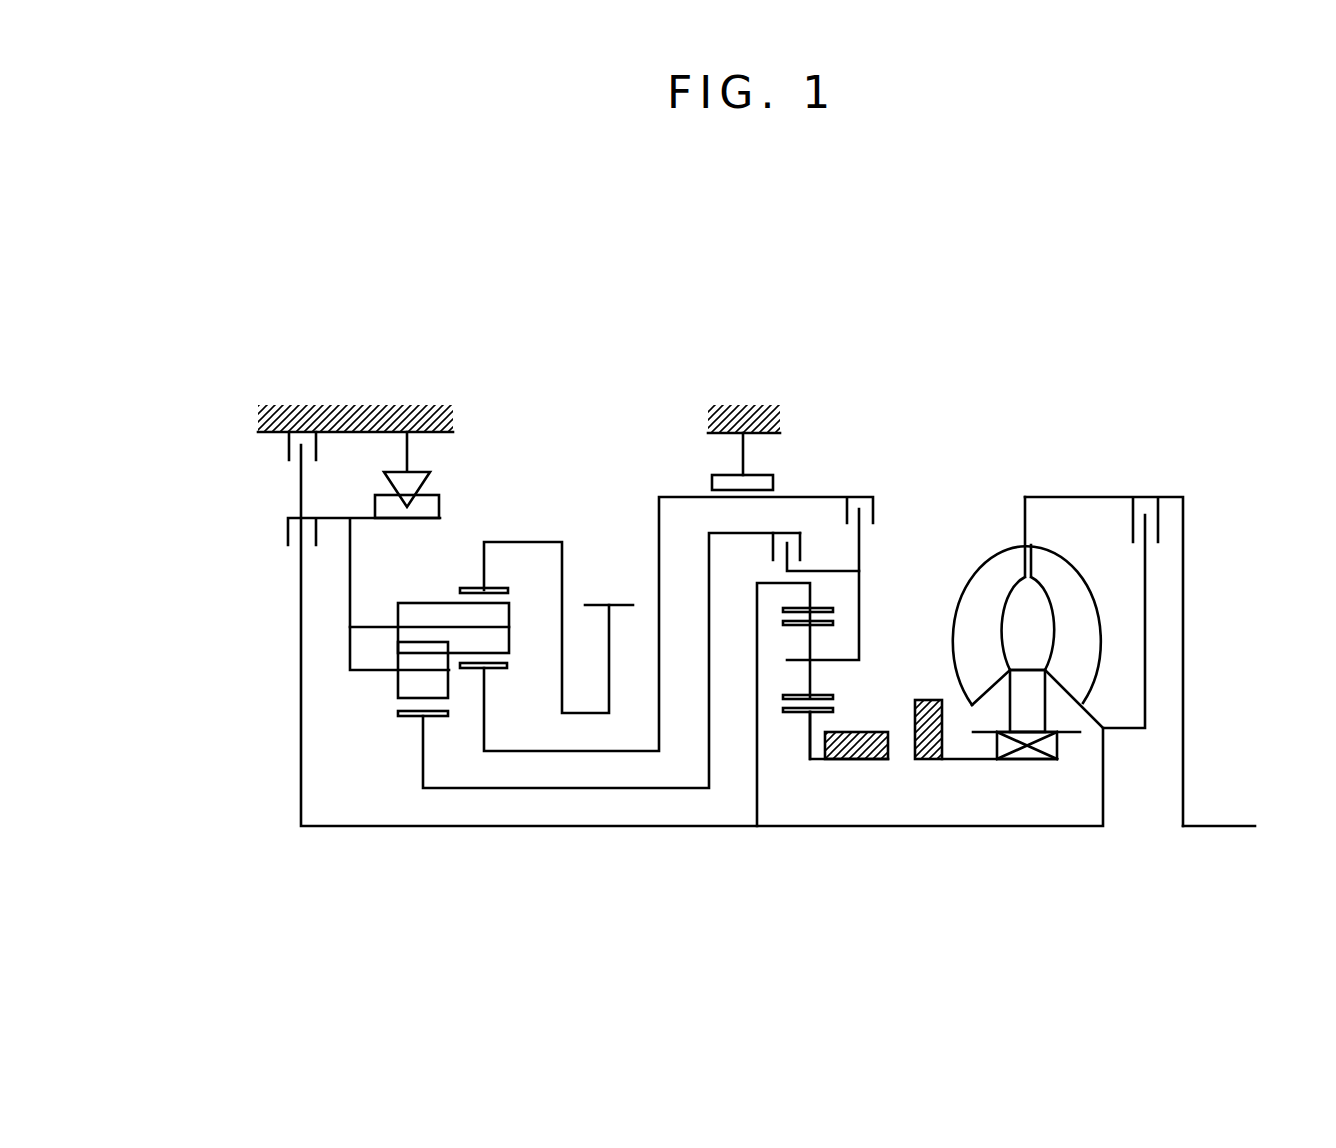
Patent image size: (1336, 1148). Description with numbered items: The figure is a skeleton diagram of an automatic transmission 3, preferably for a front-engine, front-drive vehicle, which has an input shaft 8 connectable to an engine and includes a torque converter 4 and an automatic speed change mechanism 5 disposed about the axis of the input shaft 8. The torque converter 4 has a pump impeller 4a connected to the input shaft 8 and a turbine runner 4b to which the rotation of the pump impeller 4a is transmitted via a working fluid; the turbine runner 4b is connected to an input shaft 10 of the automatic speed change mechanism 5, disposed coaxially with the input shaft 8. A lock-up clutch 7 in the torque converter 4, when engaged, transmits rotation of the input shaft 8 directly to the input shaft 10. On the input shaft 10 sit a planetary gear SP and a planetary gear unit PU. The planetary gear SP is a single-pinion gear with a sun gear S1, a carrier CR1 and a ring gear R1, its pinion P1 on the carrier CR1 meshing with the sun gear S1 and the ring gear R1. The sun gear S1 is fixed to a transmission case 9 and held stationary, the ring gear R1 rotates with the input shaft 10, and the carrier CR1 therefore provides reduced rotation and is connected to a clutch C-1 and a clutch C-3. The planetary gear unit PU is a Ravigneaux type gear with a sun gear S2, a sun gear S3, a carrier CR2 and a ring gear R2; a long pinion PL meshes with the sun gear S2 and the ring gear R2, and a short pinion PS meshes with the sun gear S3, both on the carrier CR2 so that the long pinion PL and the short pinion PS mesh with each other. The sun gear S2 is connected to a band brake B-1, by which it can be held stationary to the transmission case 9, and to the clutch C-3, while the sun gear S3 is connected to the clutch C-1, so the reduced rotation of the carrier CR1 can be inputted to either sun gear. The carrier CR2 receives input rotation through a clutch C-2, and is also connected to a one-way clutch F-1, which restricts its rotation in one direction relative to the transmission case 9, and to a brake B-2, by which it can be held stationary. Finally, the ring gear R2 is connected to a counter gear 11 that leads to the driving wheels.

The automatic transmission 3 is at (822, 189).
The torque converter 4 is at (1004, 470).
The pump impeller 4a is at (1008, 568).
The turbine runner 4b is at (1070, 593).
The automatic speed change mechanism 5 is at (658, 358).
The lock-up clutch 7 is at (1165, 498).
The input shaft 8 is at (1200, 826).
The transmission case 9 is at (780, 430).
The input shaft 10 is at (1065, 830).
The counter gear 11 is at (626, 612).
The planetary gear unit PU is at (485, 497).
The long pinion PL is at (497, 615).
The short pinion PS is at (413, 685).
The ring gear R2 is at (497, 590).
The sun gear S2 is at (490, 668).
The sun gear S3 is at (410, 720).
The carrier CR2 is at (330, 651).
The carrier CR1 is at (885, 595).
The ring gear R1 is at (825, 608).
The pinion P1 is at (818, 692).
The sun gear S1 is at (797, 718).
The planetary gear SP is at (857, 715).
The brake B-1 is at (742, 433).
The brake B-2 is at (355, 418).
The one-way clutch F-1 is at (407, 447).
The clutch C-1 is at (790, 552).
The clutch C-2 is at (351, 594).
The clutch C-3 is at (846, 584).